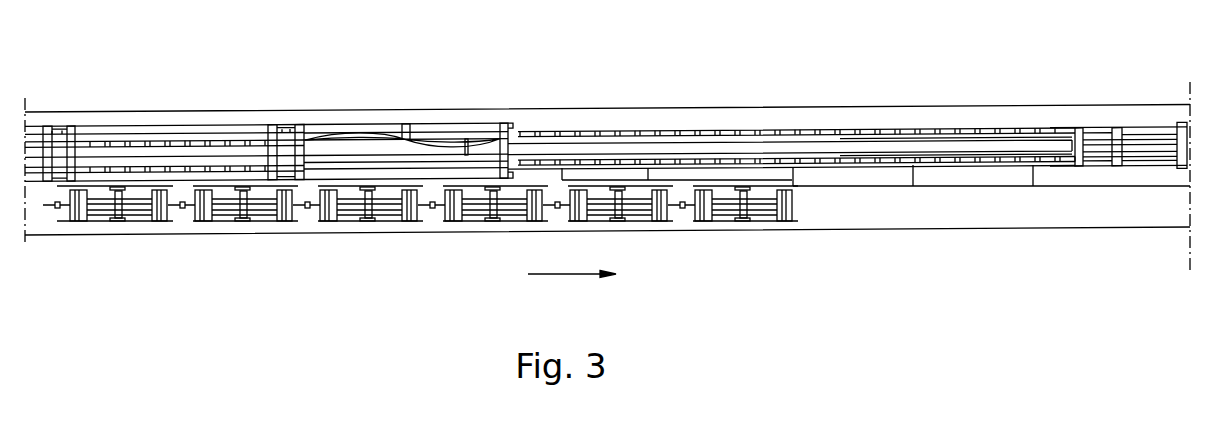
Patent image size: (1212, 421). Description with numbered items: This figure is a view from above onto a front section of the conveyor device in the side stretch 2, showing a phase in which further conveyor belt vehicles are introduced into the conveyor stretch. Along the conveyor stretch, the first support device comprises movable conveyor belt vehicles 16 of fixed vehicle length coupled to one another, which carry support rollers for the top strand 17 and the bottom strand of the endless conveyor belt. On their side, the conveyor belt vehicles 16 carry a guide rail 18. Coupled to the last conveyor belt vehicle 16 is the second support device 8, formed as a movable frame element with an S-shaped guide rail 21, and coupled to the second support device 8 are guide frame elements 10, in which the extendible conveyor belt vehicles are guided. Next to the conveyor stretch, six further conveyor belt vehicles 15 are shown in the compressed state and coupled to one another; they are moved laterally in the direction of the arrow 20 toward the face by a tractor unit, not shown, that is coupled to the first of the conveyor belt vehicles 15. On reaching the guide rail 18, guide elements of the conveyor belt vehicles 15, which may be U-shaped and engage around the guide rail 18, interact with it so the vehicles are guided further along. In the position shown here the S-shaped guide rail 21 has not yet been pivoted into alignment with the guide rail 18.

The side stretch 2 is at (350, 228).
The second support device 8 is at (425, 128).
The guide frame element 10 is at (145, 127).
The further conveyor belt vehicle 15 is at (240, 222).
The conveyor belt vehicle 16 is at (592, 132).
The top strand 17 is at (903, 148).
The guide rail 18 is at (965, 187).
The arrow 20 is at (572, 287).
The S-shaped guide rail 21 is at (330, 133).